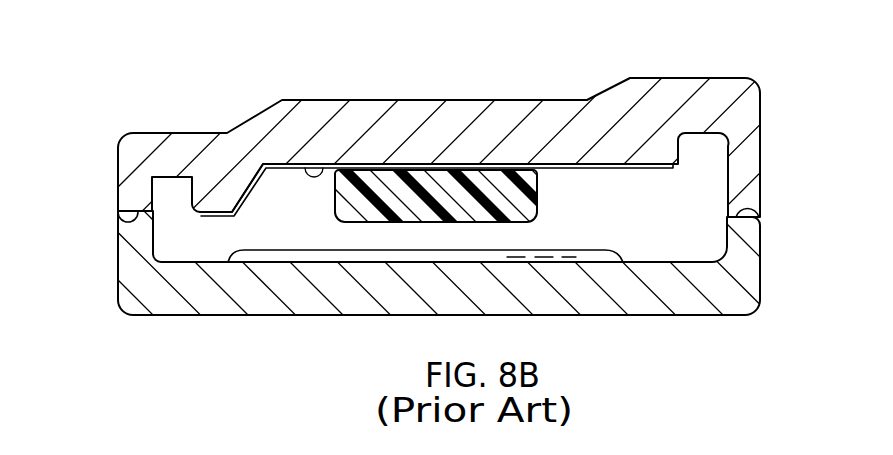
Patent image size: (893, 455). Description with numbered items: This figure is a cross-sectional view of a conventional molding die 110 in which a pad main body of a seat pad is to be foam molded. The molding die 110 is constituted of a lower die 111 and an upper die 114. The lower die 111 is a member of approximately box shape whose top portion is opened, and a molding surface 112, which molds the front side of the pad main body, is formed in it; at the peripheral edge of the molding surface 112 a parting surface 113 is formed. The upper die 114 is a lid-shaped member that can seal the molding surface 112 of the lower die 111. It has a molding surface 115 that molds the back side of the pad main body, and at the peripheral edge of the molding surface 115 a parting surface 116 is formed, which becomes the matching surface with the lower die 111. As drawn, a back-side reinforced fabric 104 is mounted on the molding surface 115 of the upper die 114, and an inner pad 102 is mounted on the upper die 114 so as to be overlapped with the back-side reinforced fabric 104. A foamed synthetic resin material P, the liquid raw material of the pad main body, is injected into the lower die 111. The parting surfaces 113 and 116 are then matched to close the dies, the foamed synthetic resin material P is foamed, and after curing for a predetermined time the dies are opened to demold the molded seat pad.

The molding die 110 is at (767, 68).
The lower die 111 is at (690, 307).
The molding surface 112 is at (640, 260).
The parting surface 113 is at (763, 204).
The upper die 114 is at (558, 108).
The molding surface 115 is at (323, 164).
The parting surface 116 is at (117, 220).
The back-side reinforced fabric 104 is at (582, 168).
The inner pad 102 is at (427, 221).
The foamed synthetic resin material P is at (302, 258).